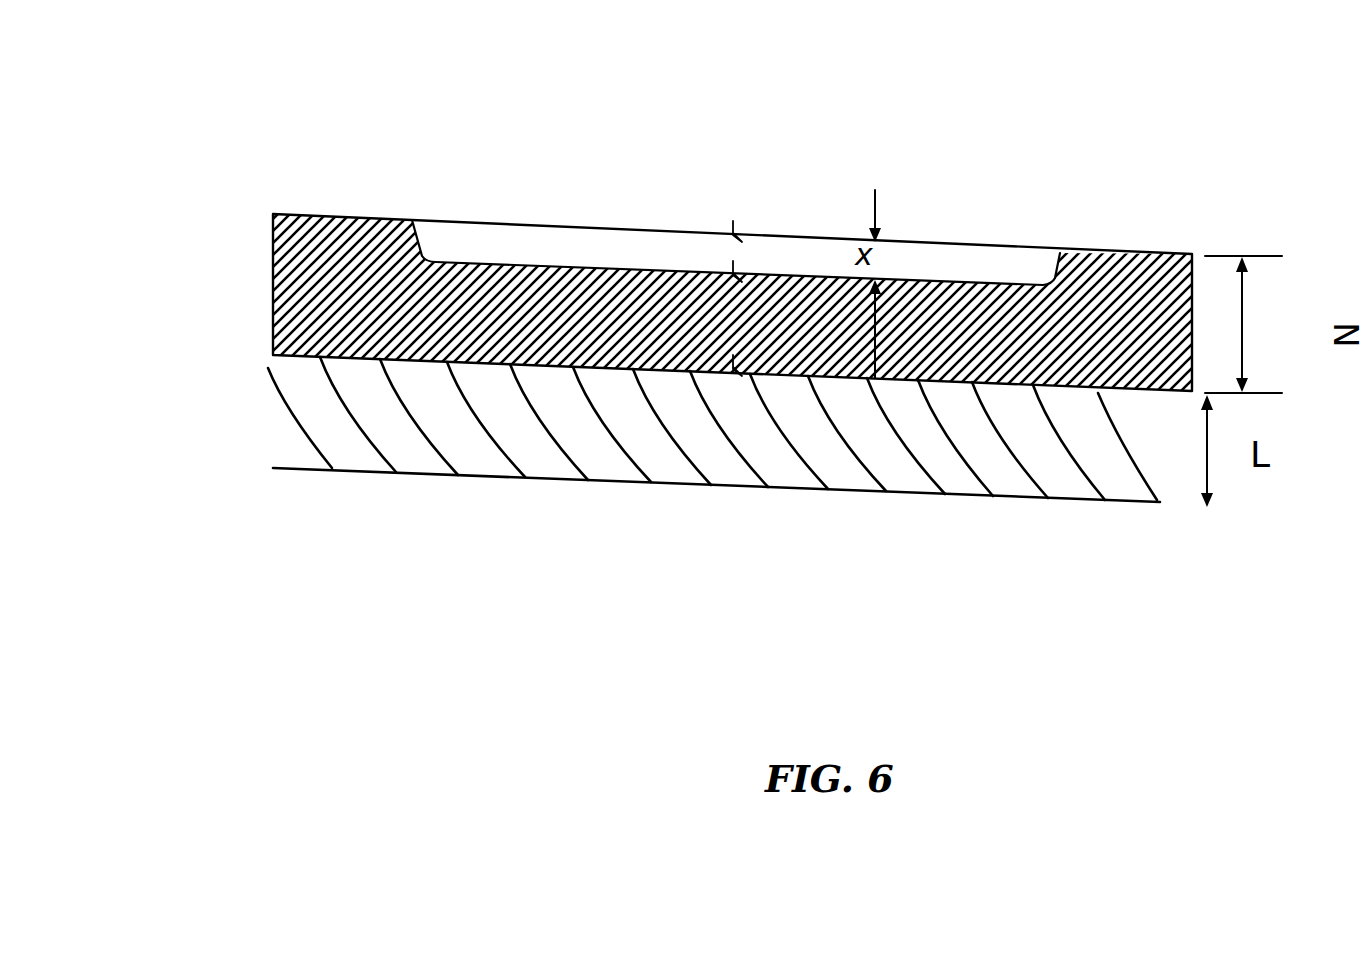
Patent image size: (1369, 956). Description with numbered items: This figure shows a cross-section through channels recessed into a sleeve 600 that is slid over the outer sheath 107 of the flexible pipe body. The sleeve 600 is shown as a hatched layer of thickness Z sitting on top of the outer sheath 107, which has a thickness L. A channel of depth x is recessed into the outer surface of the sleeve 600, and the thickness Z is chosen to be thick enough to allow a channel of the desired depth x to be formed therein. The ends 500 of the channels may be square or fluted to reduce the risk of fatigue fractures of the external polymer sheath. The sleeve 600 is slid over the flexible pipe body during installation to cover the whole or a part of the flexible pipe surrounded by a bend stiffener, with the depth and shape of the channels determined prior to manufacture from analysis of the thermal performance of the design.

The ends of the channels 500 is at (422, 246).
The sleeve 600 is at (310, 291).
The outer sheath 107 is at (307, 398).